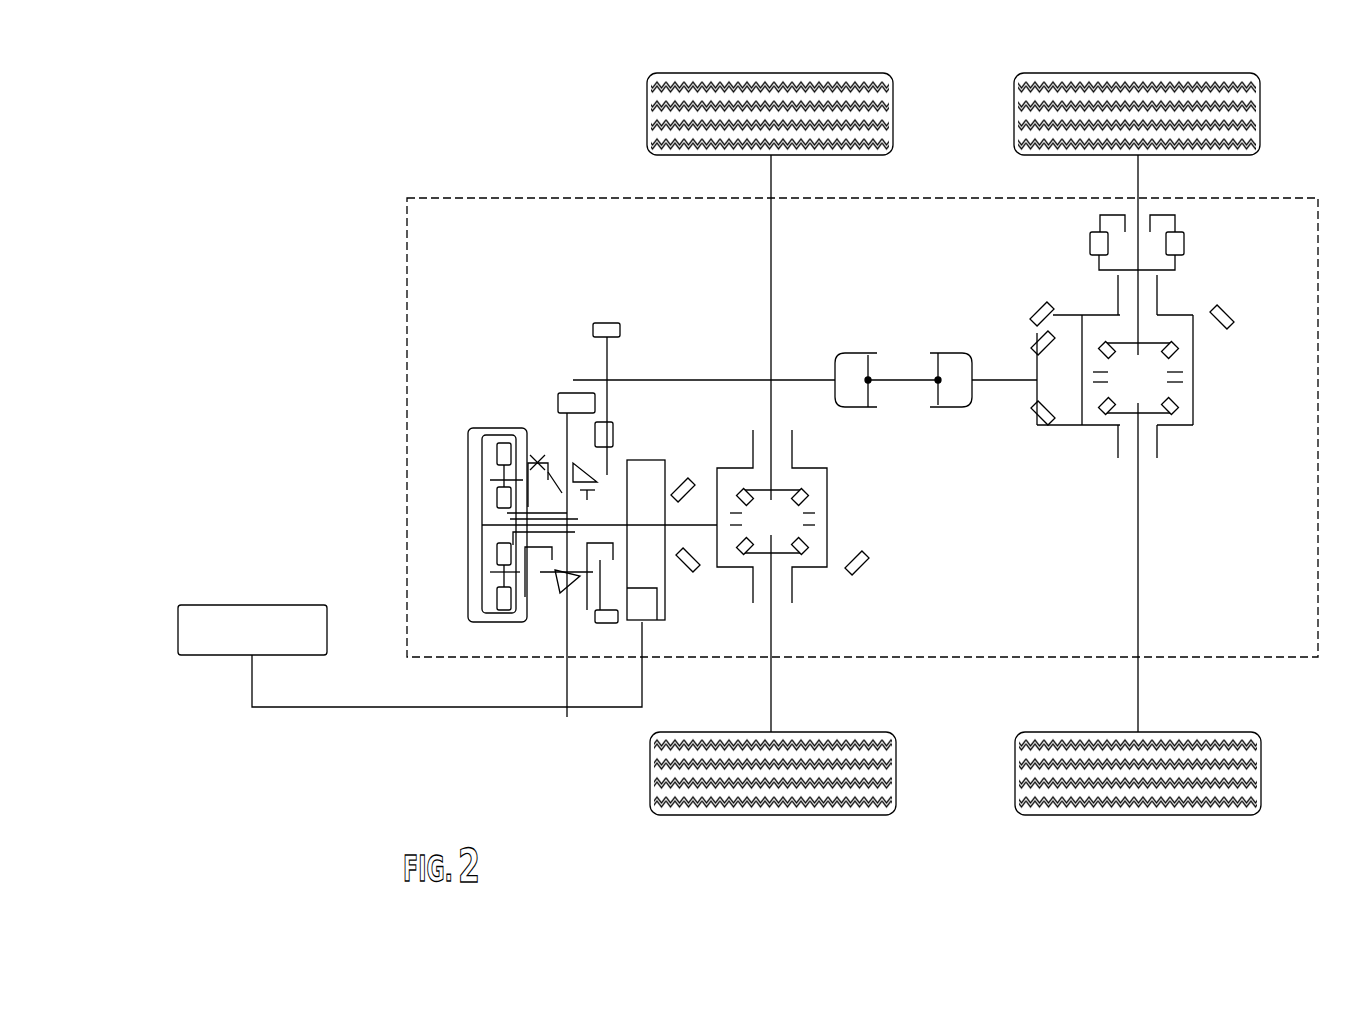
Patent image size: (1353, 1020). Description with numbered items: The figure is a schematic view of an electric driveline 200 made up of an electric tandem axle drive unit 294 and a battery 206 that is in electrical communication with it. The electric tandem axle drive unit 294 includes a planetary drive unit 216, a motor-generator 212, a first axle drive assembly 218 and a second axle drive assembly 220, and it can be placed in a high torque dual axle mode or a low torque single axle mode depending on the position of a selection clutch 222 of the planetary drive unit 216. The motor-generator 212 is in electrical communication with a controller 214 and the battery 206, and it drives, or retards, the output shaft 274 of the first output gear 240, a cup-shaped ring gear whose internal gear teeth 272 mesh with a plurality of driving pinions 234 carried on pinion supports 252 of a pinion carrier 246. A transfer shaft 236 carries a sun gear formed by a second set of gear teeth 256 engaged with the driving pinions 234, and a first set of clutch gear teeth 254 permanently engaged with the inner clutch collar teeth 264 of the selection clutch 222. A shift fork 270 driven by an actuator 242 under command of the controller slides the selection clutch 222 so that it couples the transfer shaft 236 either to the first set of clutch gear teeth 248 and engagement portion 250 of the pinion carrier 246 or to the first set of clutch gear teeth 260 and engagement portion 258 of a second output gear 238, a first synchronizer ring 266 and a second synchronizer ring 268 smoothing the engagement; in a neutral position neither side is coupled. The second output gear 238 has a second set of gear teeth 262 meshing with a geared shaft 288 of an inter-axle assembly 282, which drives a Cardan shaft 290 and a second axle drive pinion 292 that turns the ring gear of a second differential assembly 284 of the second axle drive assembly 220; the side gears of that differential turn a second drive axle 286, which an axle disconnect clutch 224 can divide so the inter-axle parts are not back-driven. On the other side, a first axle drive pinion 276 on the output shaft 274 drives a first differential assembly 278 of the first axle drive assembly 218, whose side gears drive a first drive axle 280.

The electric driveline 200 is at (187, 126).
The battery 206 is at (207, 655).
The motor-generator 212 is at (665, 468).
The controller 214 is at (643, 622).
The planetary drive unit 216 is at (437, 313).
The first axle drive assembly 218 is at (803, 630).
The second axle drive assembly 220 is at (1173, 498).
The selection clutch 222 is at (545, 378).
The axle disconnect clutch 224 is at (1175, 217).
The driving pinions 234 is at (527, 597).
The transfer shaft 236 is at (575, 517).
The second output gear 238 is at (600, 460).
The first output gear 240 is at (482, 555).
The actuator 242 is at (585, 392).
The pinion carrier 246 is at (548, 612).
The first set of clutch gear teeth 248 is at (545, 457).
The engagement portion 250 is at (558, 598).
The pinion supports 252 is at (493, 473).
The first set of clutch gear teeth 254 is at (576, 585).
The second set of gear teeth 256 is at (497, 548).
The engagement portion 258 is at (597, 565).
The first set of clutch gear teeth 260 is at (618, 625).
The second set of gear teeth 262 is at (630, 410).
The inner clutch collar teeth 264 is at (497, 500).
The first synchronizer ring 266 is at (560, 467).
The second synchronizer ring 268 is at (598, 625).
The shift fork 270 is at (570, 393).
The gear teeth 272 is at (486, 618).
The output shaft 274 is at (688, 507).
The first axle drive pinion 276 is at (693, 513).
The first differential assembly 278 is at (827, 512).
The first drive axle 280 is at (772, 305).
The inter-axle assembly 282 is at (950, 315).
The second differential assembly 284 is at (1195, 405).
The second drive axle 286 is at (1138, 568).
The geared shaft 288 is at (697, 380).
The Cardan shaft 290 is at (905, 383).
The second axle drive pinion 292 is at (1030, 400).
The electric tandem axle drive unit 294 is at (407, 198).